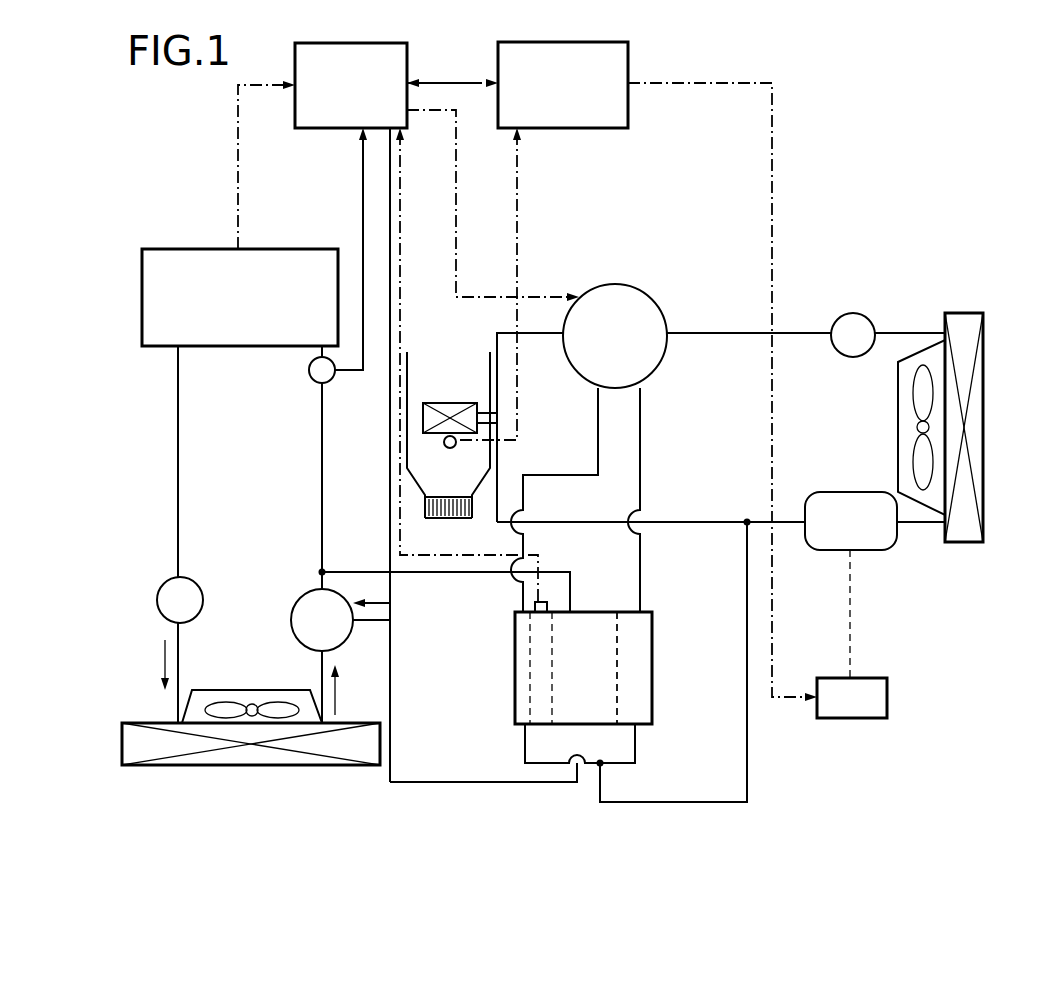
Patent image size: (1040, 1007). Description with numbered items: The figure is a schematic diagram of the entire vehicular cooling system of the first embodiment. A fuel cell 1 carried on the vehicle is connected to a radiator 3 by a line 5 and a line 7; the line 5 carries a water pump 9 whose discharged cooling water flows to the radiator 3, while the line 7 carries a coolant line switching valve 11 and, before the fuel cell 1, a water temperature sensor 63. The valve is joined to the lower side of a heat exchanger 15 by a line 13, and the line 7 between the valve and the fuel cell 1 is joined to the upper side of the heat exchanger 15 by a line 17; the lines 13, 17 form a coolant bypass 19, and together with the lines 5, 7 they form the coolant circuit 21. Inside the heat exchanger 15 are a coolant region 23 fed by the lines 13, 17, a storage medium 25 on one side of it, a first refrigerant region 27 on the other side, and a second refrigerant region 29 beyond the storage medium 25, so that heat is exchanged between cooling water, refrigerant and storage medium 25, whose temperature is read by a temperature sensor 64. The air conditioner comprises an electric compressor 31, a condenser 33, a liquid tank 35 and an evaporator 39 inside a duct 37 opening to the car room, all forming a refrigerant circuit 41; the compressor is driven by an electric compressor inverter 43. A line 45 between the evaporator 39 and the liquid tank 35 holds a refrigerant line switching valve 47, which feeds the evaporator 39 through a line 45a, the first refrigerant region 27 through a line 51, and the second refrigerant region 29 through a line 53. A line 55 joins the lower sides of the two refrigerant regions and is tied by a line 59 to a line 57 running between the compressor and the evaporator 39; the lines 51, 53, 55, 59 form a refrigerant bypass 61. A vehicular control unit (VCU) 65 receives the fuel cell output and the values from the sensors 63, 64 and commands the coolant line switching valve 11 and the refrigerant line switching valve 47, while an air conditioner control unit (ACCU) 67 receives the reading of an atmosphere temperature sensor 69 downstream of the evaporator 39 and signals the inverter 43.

The fuel cell 1 is at (280, 249).
The radiator 3 is at (243, 767).
The line 5 is at (178, 495).
The line 7 is at (322, 475).
The water pump 9 is at (157, 597).
The coolant line switching valve 11 is at (291, 617).
The line 13 is at (450, 783).
The heat exchanger 15 is at (665, 686).
The line 17 is at (432, 575).
The coolant bypass 19 is at (535, 788).
The coolant circuit 21 is at (168, 393).
The coolant region 23 is at (597, 612).
The storage medium 25 is at (530, 707).
The first refrigerant region 27 is at (640, 633).
The second refrigerant region 29 is at (515, 653).
The electric compressor 31 is at (873, 552).
The condenser 33 is at (898, 420).
The liquid tank 35 is at (853, 313).
The duct 37 is at (410, 373).
The evaporator 39 is at (452, 403).
The refrigerant circuit 41 is at (712, 333).
The electric compressor inverter 43 is at (888, 697).
The line 45 is at (745, 338).
The line 45a is at (537, 338).
The refrigerant line switching valve 47 is at (628, 285).
The line 51 is at (643, 560).
The line 53 is at (598, 443).
The line 55 is at (635, 737).
The line 57 is at (682, 518).
The line 59 is at (750, 773).
The refrigerant bypass 61 is at (653, 435).
The water temperature sensor 63 is at (309, 370).
The temperature sensor 64 is at (543, 600).
The vehicular control unit (VCU) 65 is at (407, 48).
The air conditioner control unit (ACCU) 67 is at (628, 52).
The atmosphere temperature sensor 69 is at (450, 448).